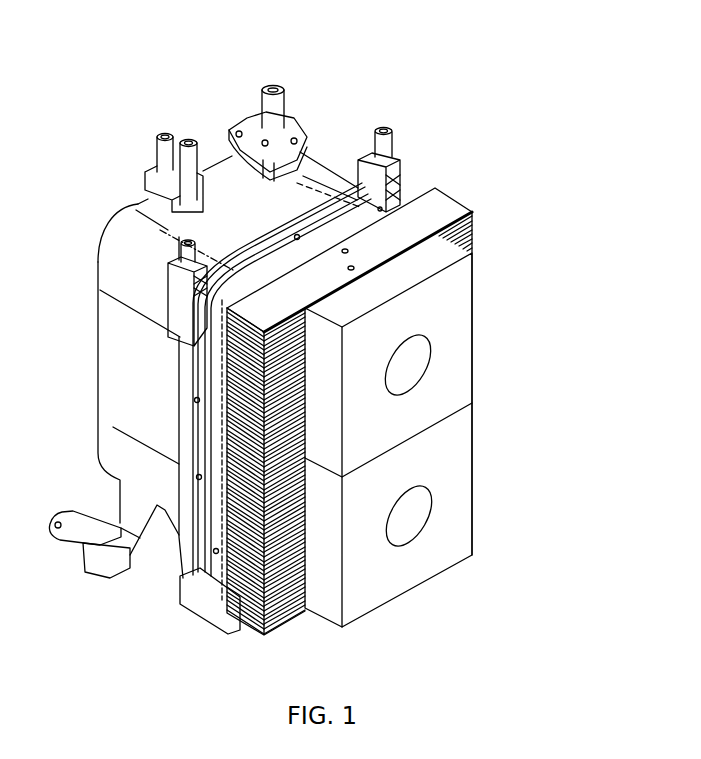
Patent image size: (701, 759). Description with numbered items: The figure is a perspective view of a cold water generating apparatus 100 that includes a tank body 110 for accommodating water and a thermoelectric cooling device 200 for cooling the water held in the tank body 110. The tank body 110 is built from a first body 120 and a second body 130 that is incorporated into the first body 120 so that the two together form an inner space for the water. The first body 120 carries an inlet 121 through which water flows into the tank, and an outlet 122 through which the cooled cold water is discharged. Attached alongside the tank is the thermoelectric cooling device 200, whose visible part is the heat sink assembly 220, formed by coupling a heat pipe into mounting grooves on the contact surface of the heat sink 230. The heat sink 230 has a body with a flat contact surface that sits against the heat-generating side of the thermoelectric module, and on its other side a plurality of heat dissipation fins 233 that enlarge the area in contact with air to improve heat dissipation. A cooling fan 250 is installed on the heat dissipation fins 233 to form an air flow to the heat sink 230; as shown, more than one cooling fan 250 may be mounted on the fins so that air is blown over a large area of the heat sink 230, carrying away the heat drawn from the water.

The cold water generating apparatus 100 is at (133, 37).
The tank body 110 is at (428, 107).
The first body 120 is at (302, 156).
The inlet 121 is at (198, 158).
The outlet 122 is at (289, 116).
The second body 130 is at (389, 165).
The thermoelectric cooling device 200 is at (459, 186).
The heat sink assembly 220 is at (473, 233).
The heat sink 230 is at (349, 440).
The heat dissipation fins 233 is at (290, 618).
The cooling fan 250 is at (473, 338).